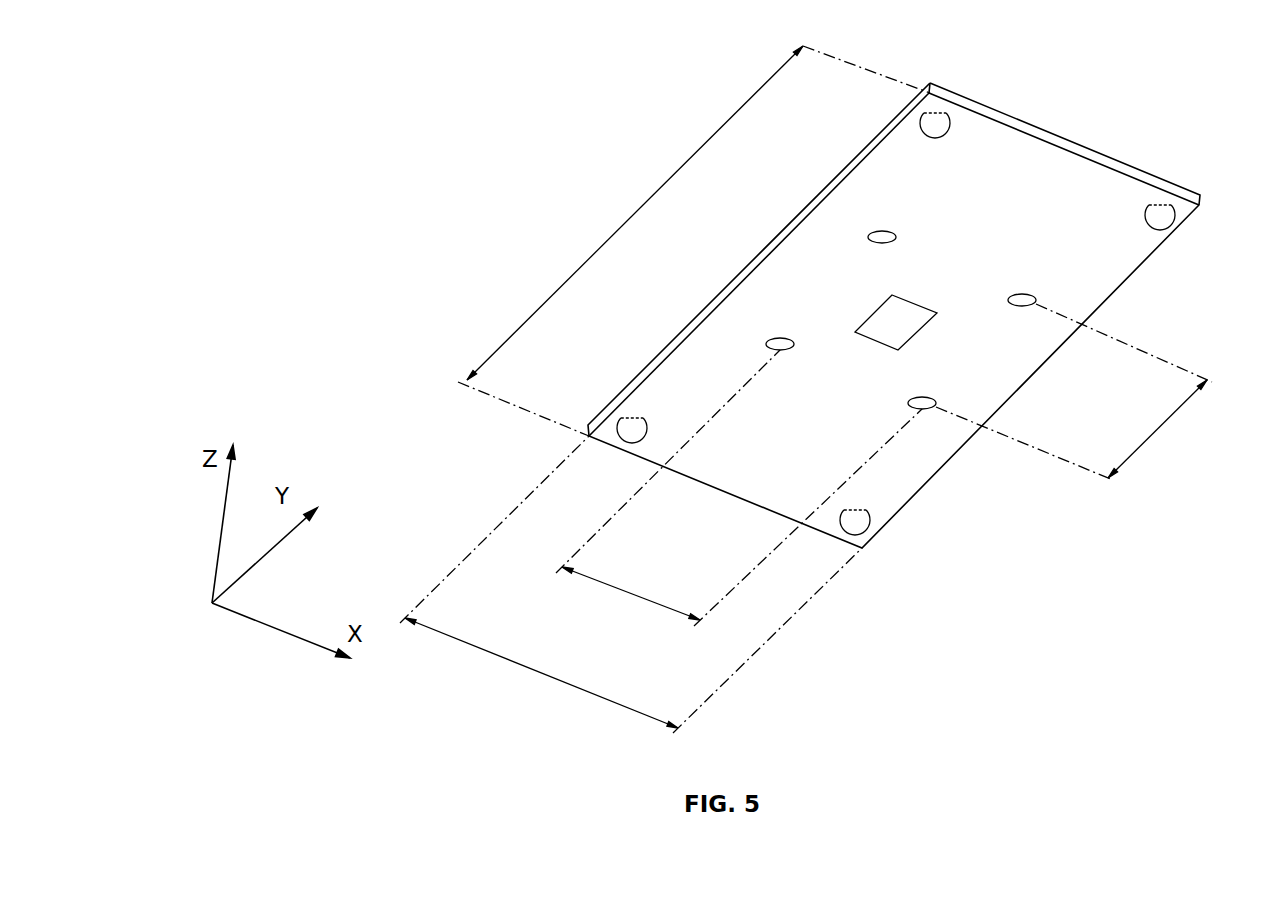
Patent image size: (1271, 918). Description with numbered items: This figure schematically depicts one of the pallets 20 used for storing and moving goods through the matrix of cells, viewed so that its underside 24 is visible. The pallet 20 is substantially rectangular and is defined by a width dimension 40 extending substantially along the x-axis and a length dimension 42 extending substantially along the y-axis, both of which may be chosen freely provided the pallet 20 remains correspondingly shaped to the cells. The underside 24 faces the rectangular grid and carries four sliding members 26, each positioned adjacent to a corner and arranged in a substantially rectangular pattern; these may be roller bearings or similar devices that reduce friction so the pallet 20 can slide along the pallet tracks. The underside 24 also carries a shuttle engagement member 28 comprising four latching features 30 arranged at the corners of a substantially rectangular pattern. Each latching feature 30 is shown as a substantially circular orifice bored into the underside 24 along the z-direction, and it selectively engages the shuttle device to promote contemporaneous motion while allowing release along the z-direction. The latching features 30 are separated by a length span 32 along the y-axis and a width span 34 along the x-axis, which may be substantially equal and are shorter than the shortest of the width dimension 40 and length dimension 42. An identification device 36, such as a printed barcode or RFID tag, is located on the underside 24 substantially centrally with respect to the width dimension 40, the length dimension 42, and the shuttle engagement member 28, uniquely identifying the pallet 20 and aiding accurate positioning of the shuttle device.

The pallet 20 is at (1072, 150).
The underside 24 is at (979, 185).
The sliding member 26 is at (933, 122).
The shuttle engagement member 28 is at (790, 260).
The latching feature 30 is at (882, 230).
The length span 32 is at (1153, 435).
The width span 34 is at (638, 598).
The identification device 36 is at (905, 313).
The width dimension 40 is at (578, 692).
The length dimension 42 is at (635, 212).